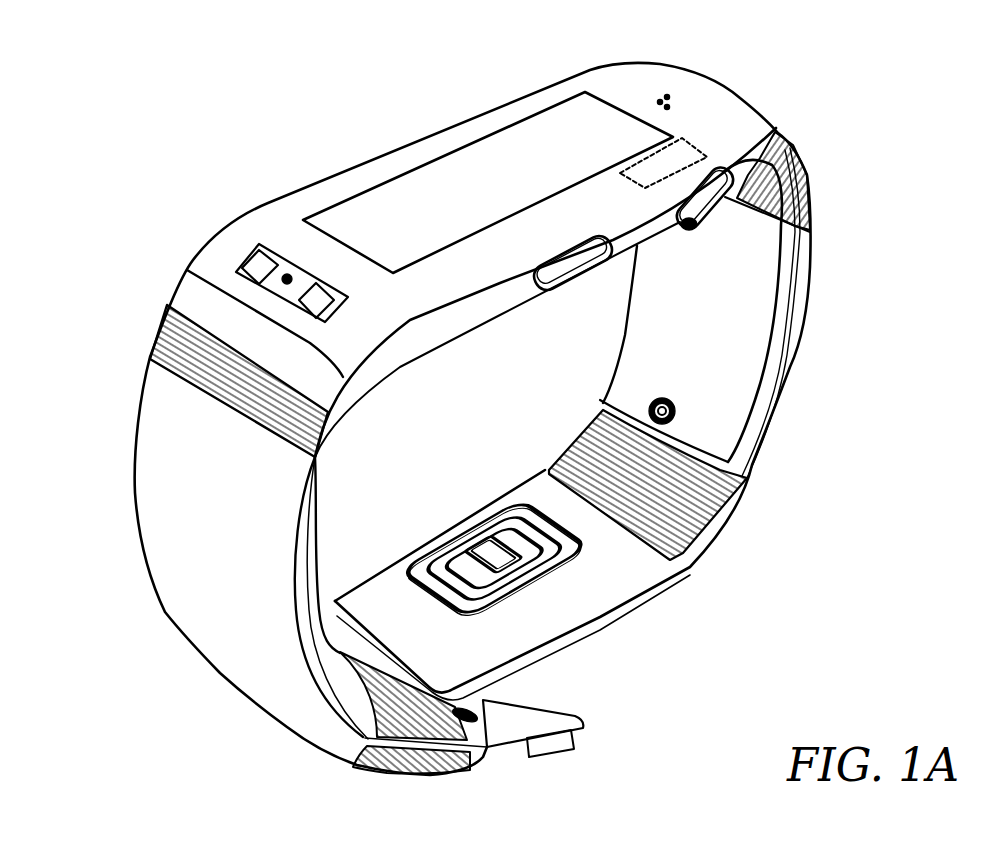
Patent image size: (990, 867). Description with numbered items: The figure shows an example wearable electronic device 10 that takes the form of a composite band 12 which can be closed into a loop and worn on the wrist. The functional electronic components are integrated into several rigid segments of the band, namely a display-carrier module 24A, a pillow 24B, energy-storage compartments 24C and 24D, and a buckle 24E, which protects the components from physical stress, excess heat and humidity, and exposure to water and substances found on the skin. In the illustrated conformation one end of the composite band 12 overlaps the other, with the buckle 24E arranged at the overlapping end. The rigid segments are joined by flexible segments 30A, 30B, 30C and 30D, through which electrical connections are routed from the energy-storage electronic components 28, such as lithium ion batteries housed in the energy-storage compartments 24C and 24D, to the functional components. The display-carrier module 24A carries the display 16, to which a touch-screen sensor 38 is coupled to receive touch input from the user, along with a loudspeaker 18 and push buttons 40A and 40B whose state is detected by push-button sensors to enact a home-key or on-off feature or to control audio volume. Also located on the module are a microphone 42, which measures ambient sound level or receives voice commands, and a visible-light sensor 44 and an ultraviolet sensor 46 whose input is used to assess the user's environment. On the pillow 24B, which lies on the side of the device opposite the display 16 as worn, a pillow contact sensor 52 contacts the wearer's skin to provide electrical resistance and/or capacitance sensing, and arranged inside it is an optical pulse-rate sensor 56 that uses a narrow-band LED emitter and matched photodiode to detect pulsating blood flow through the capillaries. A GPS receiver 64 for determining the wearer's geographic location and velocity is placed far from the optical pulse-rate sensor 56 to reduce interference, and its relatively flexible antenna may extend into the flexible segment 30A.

The wearable electronic device 10 is at (72, 126).
The composite band 12 is at (537, 417).
The display 16 is at (504, 192).
The loudspeaker 18 is at (666, 91).
The display-carrier module 24A is at (468, 294).
The pillow 24B is at (635, 582).
The energy-storage compartment 24C is at (788, 357).
The energy-storage compartment 24D is at (193, 633).
The buckle 24E is at (535, 705).
The energy-storage electronic component 28 is at (713, 332).
The flexible segment 30A is at (802, 180).
The flexible segment 30B is at (725, 532).
The flexible segment 30C is at (395, 772).
The flexible segment 30D is at (325, 440).
The touch-screen sensor 38 is at (540, 143).
The push button 40A is at (572, 262).
The push button 40B is at (705, 200).
The microphone 42 is at (287, 275).
The visible-light sensor 44 is at (326, 300).
The ultraviolet sensor 46 is at (240, 256).
The pillow contact sensor 52 is at (433, 600).
The optical pulse-rate sensor 56 is at (513, 542).
The GPS receiver 64 is at (690, 137).